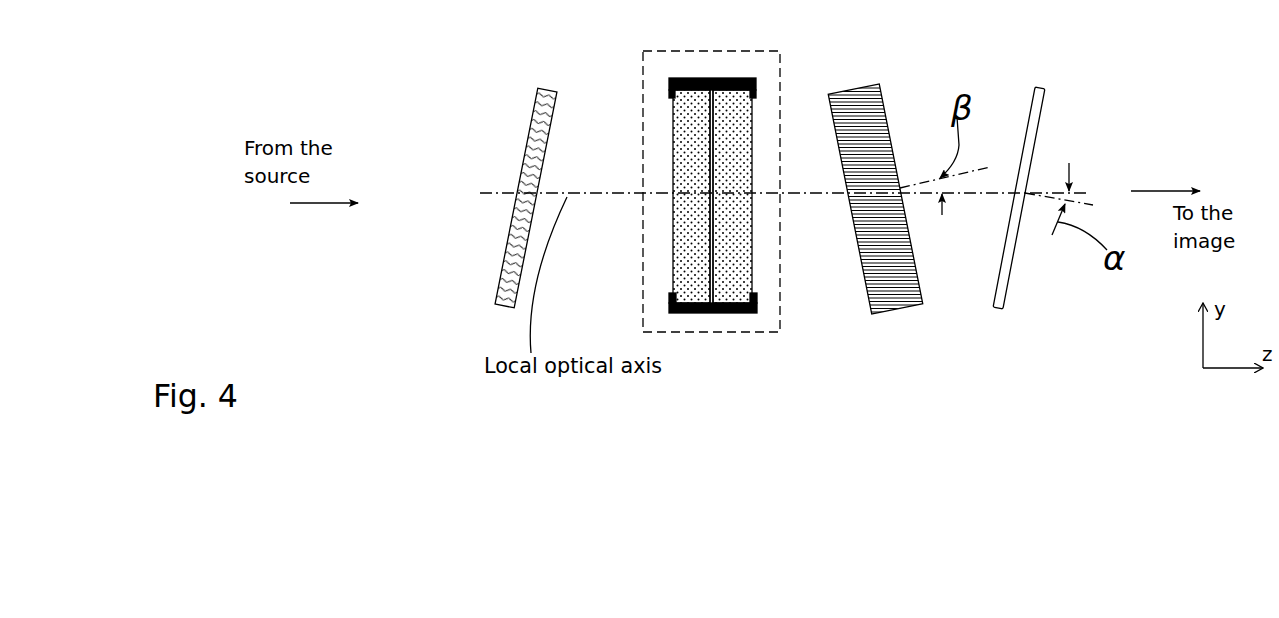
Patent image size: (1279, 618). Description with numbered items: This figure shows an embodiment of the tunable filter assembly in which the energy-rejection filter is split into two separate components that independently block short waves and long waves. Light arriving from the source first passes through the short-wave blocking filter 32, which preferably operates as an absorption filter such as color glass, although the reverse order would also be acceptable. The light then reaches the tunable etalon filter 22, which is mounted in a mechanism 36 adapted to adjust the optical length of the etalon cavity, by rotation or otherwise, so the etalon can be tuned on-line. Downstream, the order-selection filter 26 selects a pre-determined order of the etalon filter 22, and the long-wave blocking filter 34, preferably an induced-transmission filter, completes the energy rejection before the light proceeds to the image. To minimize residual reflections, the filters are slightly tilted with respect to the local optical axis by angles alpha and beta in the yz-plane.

The tunable etalon filter 22 is at (728, 313).
The order-selection filter 26 is at (872, 105).
The short-wave blocking filter 32 is at (540, 105).
The long-wave blocking filter 34 is at (1042, 117).
The mechanism 36 is at (777, 298).